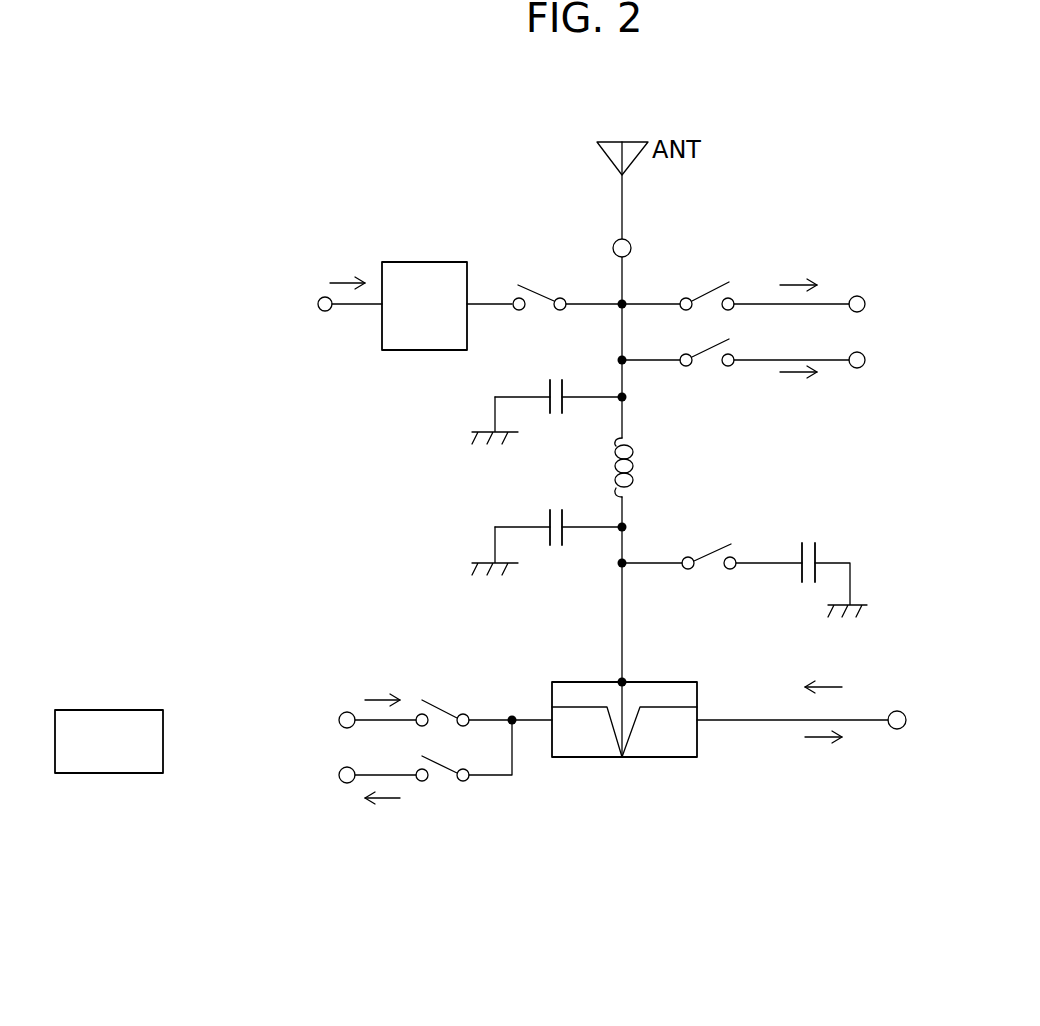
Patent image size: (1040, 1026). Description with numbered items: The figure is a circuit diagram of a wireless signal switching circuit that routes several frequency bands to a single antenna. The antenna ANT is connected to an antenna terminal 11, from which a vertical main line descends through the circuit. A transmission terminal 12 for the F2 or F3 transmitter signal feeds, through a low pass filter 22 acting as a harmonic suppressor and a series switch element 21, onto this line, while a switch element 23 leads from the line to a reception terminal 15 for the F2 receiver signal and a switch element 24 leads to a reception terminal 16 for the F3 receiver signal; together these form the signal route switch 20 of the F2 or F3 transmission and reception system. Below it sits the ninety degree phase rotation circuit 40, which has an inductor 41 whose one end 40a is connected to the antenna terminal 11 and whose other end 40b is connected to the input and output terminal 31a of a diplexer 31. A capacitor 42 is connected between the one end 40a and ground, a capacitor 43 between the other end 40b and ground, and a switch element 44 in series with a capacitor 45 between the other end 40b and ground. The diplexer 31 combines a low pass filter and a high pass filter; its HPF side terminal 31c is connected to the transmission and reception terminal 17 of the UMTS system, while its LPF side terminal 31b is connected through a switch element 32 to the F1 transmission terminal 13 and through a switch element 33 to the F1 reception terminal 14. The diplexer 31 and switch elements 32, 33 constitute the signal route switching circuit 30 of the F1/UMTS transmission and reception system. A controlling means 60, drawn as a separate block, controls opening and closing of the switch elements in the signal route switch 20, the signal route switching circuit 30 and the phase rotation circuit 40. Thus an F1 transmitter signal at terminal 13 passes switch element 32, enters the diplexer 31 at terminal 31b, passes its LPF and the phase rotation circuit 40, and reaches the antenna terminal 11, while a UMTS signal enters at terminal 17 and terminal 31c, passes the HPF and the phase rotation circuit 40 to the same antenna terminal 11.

The antenna terminal 11 is at (631, 245).
The transmission terminal 12 is at (325, 312).
The transmission terminal 13 is at (347, 710).
The reception terminal 14 is at (347, 785).
The reception terminal 15 is at (857, 296).
The reception terminal 16 is at (857, 368).
The transmission and reception terminal 17 is at (897, 729).
The signal route switch 20 is at (782, 192).
The switch element 21 is at (538, 285).
The low pass filter 22 is at (425, 262).
The switch element 23 is at (703, 285).
The switch element 24 is at (707, 368).
The signal route switching circuit 30 is at (545, 830).
The diplexer 31 is at (598, 757).
The input and output terminal 31a is at (627, 680).
The LPF side terminal 31b is at (550, 716).
The HPF side terminal 31c is at (700, 716).
The switch element 32 is at (440, 698).
The switch element 33 is at (443, 785).
The 90 degree phase rotation circuit 40 is at (468, 548).
The one end of the inductor 40a is at (629, 397).
The other end of the inductor 40b is at (636, 515).
The inductor 41 is at (640, 468).
The capacitor 42 is at (557, 420).
The capacitor 43 is at (557, 550).
The switch element 44 is at (710, 572).
The capacitor 45 is at (808, 540).
The controlling means 60 is at (103, 708).